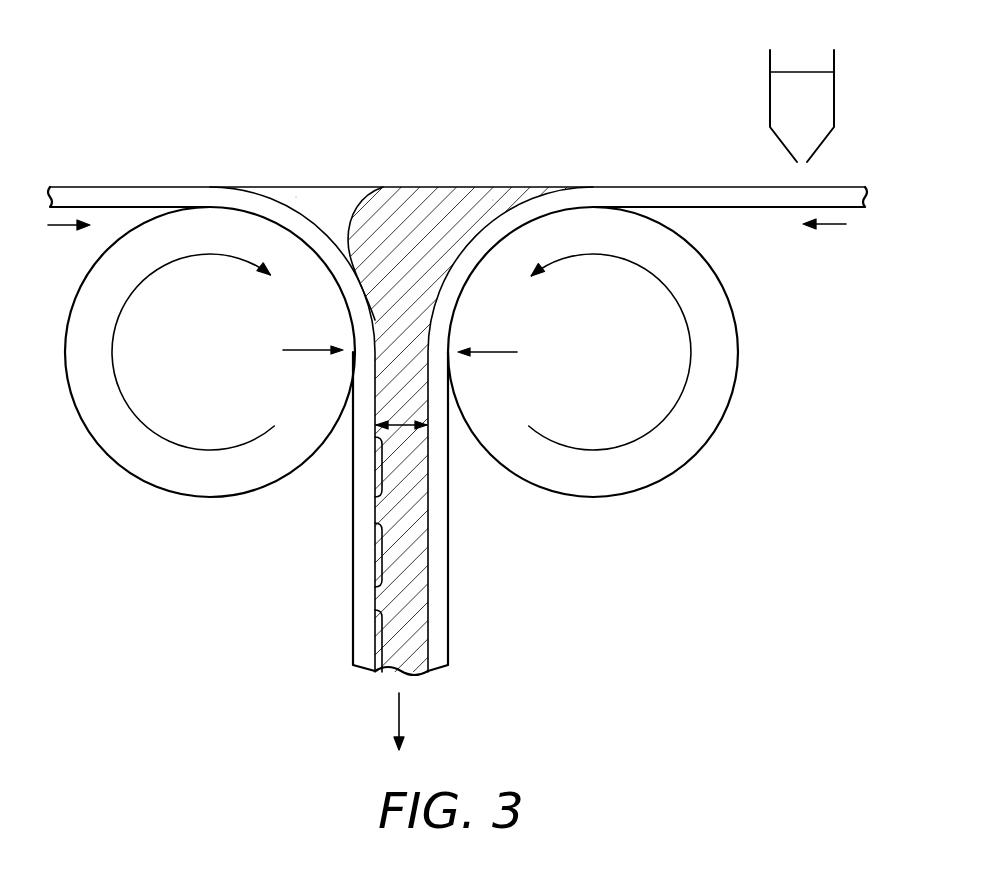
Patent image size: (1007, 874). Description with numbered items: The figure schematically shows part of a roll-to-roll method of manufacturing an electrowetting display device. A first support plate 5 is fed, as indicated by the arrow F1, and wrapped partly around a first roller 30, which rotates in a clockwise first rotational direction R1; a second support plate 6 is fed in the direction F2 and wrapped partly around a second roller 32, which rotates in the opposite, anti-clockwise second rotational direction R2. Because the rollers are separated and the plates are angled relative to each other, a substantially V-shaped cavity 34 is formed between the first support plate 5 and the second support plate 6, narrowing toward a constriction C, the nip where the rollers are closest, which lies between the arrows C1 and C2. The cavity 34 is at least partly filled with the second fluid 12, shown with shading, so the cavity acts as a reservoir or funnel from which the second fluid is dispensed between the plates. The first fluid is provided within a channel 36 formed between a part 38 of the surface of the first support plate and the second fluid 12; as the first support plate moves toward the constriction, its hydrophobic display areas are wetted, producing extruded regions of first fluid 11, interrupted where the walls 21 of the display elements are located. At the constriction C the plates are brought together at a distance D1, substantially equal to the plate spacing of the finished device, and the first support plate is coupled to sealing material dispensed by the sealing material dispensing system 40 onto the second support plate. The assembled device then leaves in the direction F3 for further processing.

The first support plate 5 is at (93, 190).
The second support plate 6 is at (658, 190).
The second fluid 12 is at (493, 200).
The cavity 34 is at (402, 228).
The channel 36 is at (297, 198).
The part of a surface of the first support plate 38 is at (321, 228).
The first roller 30 is at (207, 497).
The second roller 32 is at (592, 498).
The first fluid 11 is at (375, 533).
The walls 21 is at (380, 600).
The sealing material dispensing system 40 is at (770, 63).
The first rotational direction R1 is at (130, 293).
The second rotational direction R2 is at (668, 293).
The feeding direction of first support plate F1 is at (56, 226).
The feeding direction of second support plate F2 is at (832, 225).
The output direction F3 is at (399, 718).
The first constriction arrow C1 is at (312, 351).
The second constriction arrow C2 is at (490, 353).
The constriction C is at (410, 362).
The distance between support plates D1 is at (402, 427).